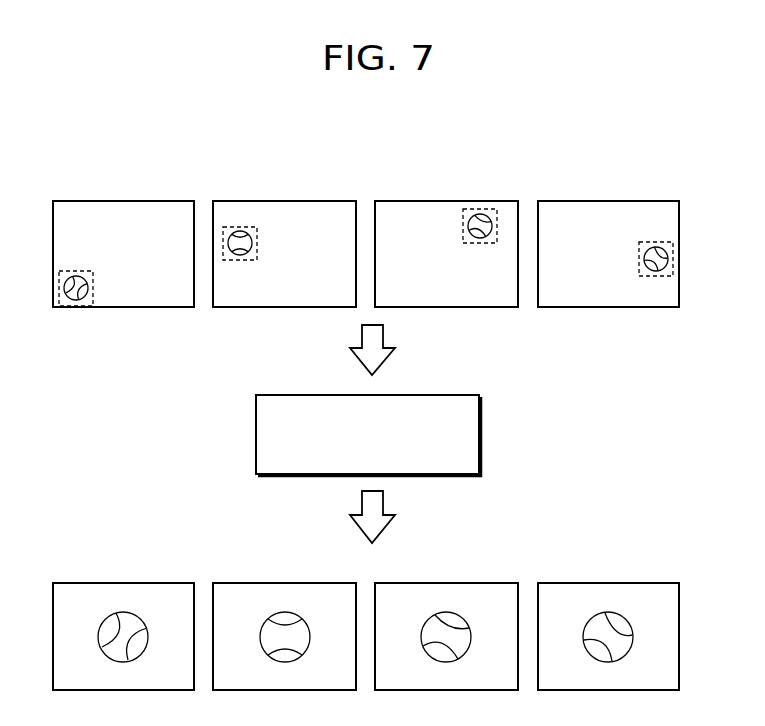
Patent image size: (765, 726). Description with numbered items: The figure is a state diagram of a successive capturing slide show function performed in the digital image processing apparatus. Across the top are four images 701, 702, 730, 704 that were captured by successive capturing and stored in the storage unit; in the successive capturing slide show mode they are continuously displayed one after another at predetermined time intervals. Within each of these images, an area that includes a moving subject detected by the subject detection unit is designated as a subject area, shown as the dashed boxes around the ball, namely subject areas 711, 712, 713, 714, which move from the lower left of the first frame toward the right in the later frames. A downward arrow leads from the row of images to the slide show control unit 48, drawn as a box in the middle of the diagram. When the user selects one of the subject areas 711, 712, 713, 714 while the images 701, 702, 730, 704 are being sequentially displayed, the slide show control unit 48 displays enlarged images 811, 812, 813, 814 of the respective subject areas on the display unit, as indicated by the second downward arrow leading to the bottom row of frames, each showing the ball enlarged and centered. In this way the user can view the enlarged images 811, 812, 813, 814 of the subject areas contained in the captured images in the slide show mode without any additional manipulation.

The image 701 is at (128, 197).
The image 702 is at (288, 197).
The third image 730 is at (449, 197).
The image 704 is at (611, 197).
The subject area 711 is at (93, 287).
The subject area 712 is at (257, 243).
The subject area 713 is at (463, 226).
The subject area 714 is at (639, 258).
The slide show control unit 48 is at (413, 395).
The enlarged image 811 is at (127, 582).
The enlarged image 812 is at (290, 582).
The enlarged image 813 is at (450, 582).
The enlarged image 814 is at (611, 582).